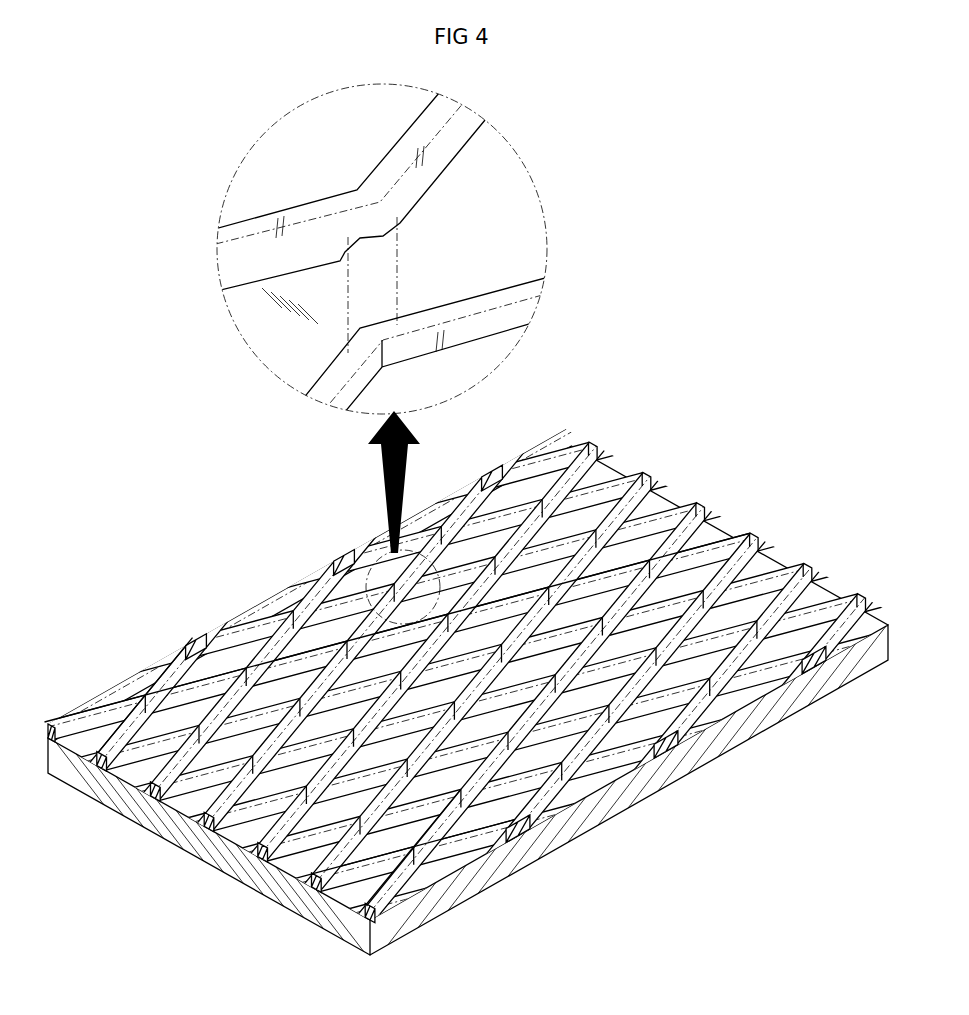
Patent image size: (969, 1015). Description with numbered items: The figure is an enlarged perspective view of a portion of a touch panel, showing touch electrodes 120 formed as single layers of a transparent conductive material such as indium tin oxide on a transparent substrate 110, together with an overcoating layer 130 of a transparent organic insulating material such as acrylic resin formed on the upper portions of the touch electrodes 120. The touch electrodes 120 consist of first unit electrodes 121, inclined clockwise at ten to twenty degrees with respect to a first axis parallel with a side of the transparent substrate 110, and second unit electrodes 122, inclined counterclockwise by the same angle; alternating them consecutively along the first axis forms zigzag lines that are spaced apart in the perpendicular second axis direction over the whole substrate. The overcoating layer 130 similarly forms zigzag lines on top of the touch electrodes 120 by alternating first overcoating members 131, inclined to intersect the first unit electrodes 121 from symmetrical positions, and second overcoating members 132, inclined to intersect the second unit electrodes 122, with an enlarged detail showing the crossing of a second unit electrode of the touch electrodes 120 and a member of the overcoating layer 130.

The transparent substrate 110 is at (544, 214).
The touch electrodes 120 is at (452, 303).
The first unit electrodes 121 is at (117, 708).
The second unit electrodes 122 is at (177, 663).
The overcoating layer 130 is at (320, 193).
The first overcoating members 131 is at (400, 885).
The second overcoating members 132 is at (455, 850).